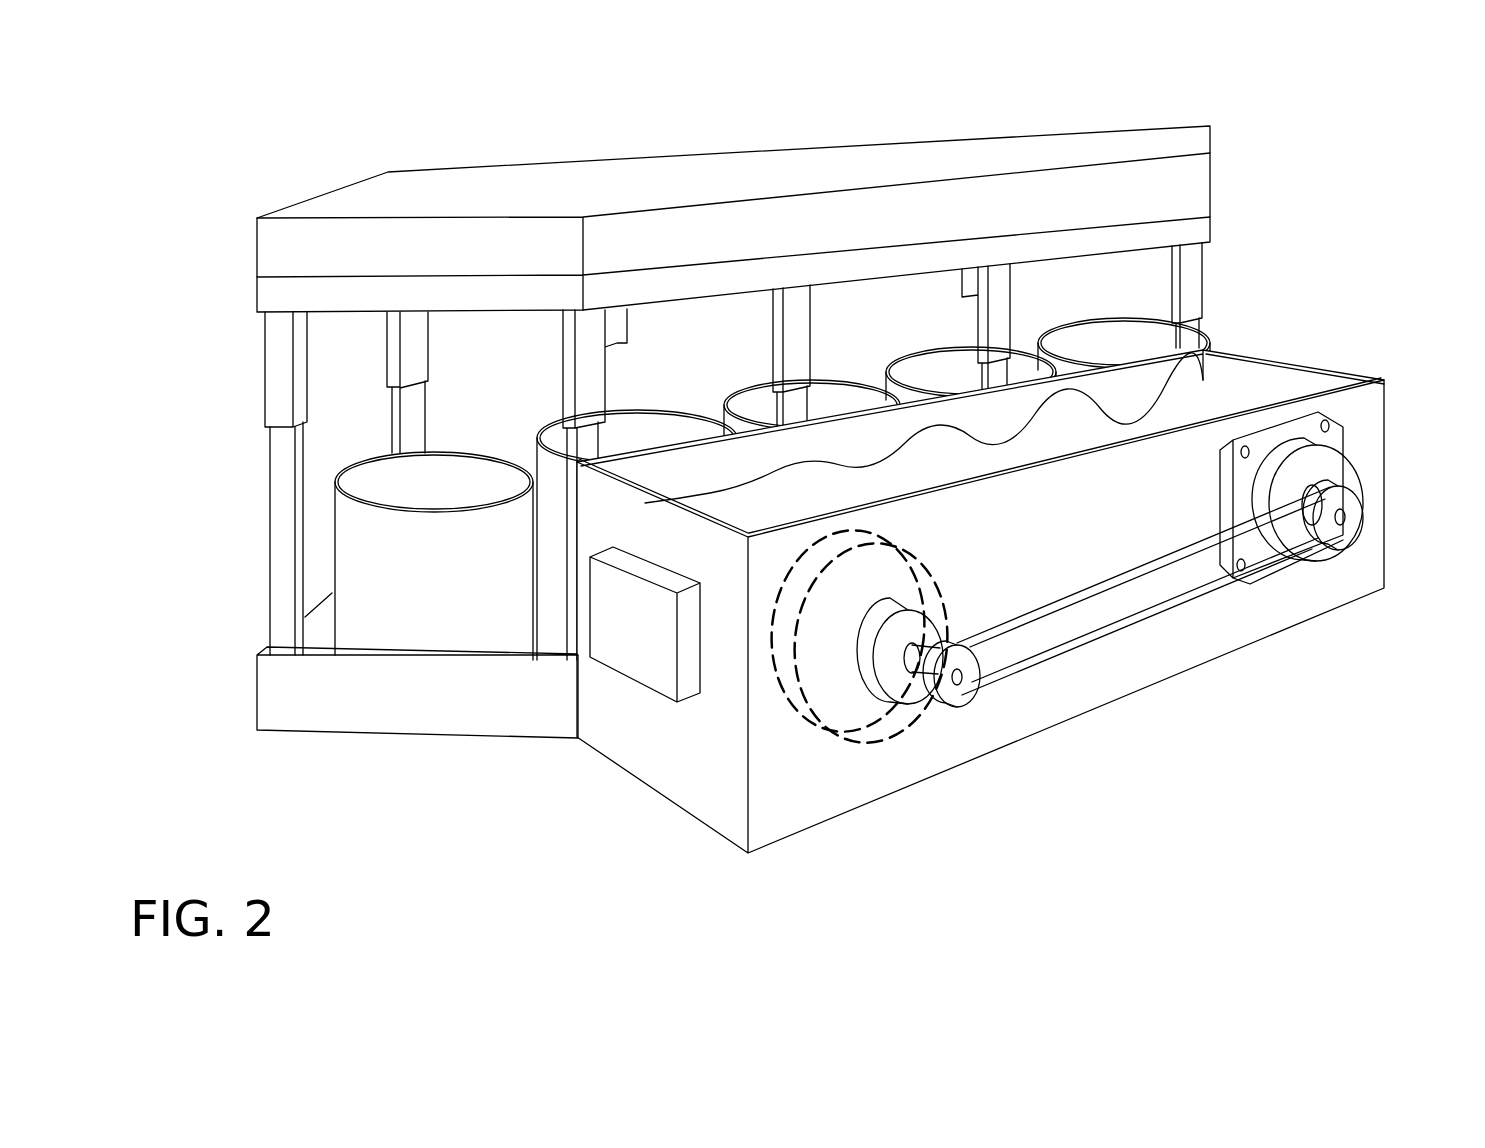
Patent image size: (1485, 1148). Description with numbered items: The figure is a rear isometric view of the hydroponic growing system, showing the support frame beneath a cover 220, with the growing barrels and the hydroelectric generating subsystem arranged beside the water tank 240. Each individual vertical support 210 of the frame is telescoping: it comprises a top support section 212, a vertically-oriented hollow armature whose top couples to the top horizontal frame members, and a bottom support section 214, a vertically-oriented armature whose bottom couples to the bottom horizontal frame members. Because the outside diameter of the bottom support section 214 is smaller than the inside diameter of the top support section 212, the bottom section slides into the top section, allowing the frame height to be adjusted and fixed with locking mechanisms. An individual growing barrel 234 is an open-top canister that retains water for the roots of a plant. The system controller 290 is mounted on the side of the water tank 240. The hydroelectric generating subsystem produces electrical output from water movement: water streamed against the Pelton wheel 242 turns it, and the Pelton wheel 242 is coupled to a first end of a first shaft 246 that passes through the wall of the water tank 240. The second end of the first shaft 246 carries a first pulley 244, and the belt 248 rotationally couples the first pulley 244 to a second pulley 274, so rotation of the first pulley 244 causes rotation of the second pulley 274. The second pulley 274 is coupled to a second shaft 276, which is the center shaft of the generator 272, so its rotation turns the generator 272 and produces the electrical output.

The cover 220 is at (928, 157).
The top support section 212 is at (280, 352).
The individual vertical support 210 is at (270, 458).
The bottom support section 214 is at (280, 568).
The individual growing barrel 234 is at (467, 601).
The system controller 290 is at (638, 630).
The water tank 240 is at (667, 773).
The Pelton wheel 242 is at (843, 735).
The first shaft 246 is at (918, 660).
The first pulley 244 is at (962, 695).
The belt 248 is at (1158, 618).
The generator 272 is at (1338, 457).
The second shaft 276 is at (1340, 512).
The second pulley 274 is at (1362, 513).